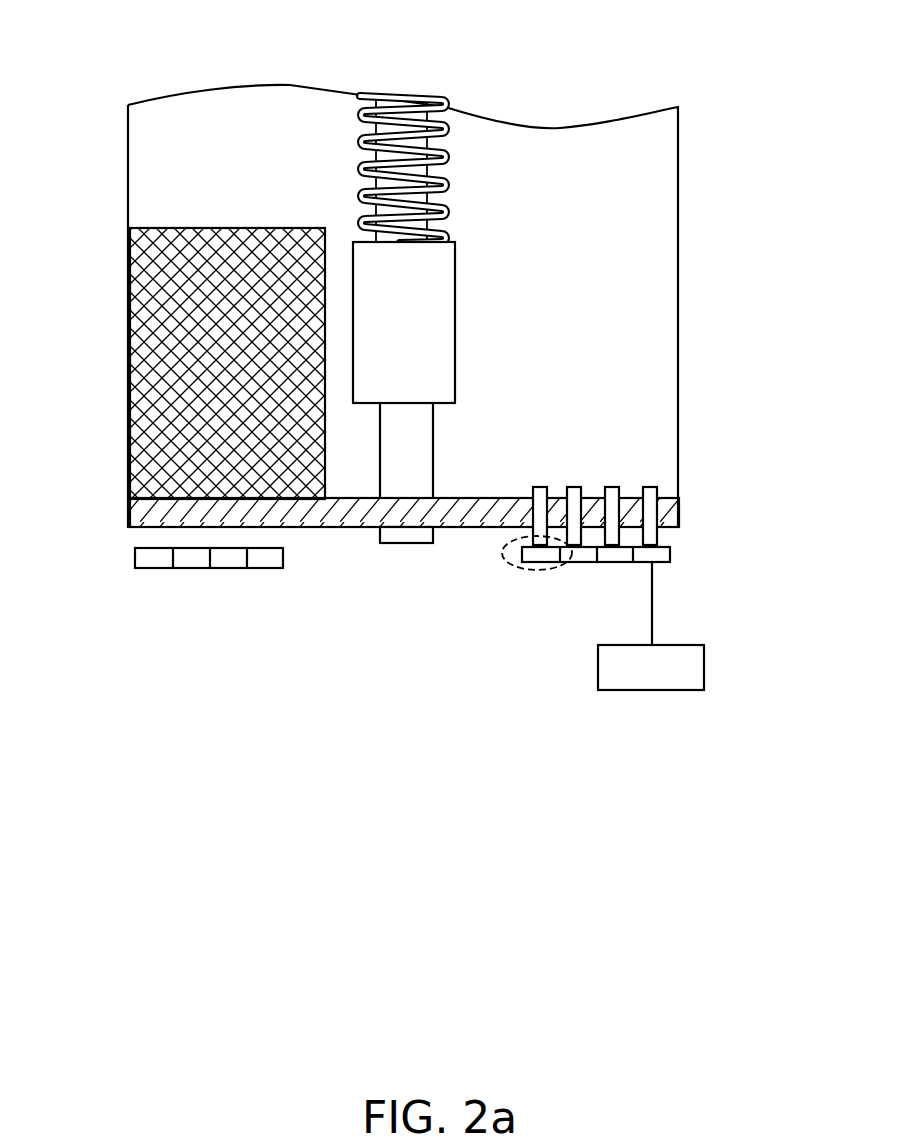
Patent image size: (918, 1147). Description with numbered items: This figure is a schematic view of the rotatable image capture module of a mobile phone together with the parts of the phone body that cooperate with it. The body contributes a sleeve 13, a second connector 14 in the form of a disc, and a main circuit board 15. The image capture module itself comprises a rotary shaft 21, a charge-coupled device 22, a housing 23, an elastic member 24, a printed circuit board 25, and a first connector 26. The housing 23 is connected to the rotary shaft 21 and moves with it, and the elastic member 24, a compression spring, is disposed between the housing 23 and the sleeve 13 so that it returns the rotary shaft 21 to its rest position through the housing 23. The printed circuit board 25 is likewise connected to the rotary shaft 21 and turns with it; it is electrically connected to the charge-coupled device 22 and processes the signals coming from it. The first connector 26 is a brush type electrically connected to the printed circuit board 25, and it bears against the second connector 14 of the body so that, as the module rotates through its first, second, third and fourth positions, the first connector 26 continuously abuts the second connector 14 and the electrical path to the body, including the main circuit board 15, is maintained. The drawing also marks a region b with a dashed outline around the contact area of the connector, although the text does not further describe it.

The sleeve 13 is at (435, 282).
The second connector 14 is at (672, 556).
The main circuit board 15 is at (713, 668).
The rotary shaft 21 is at (420, 432).
The charge-coupled device 22 is at (138, 357).
The housing 23 is at (679, 153).
The elastic member 24 is at (436, 113).
The printed circuit board 25 is at (680, 500).
The first connector 26 is at (652, 537).
The solder joint region b is at (537, 571).